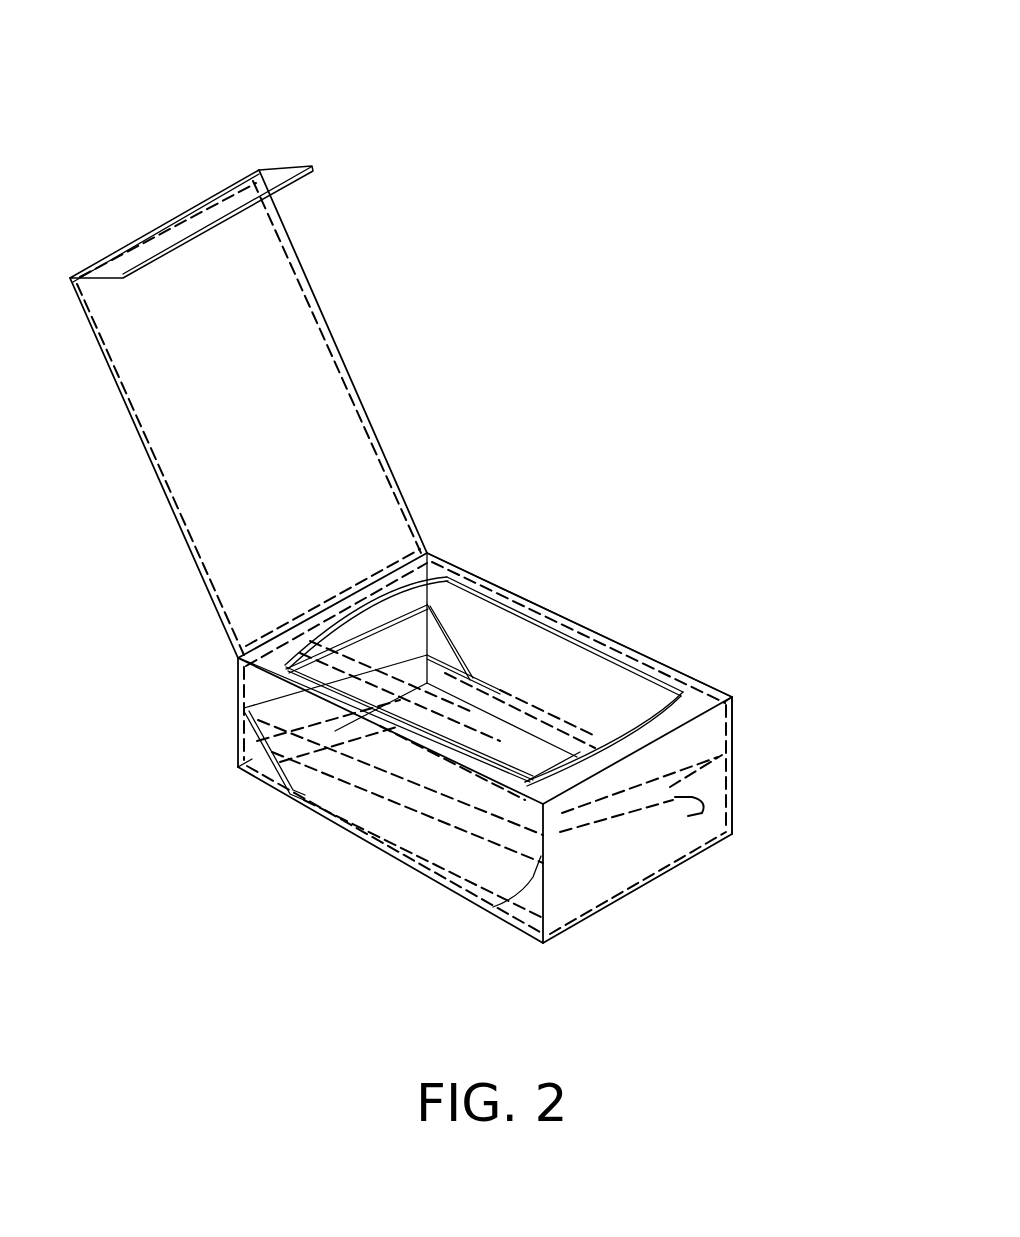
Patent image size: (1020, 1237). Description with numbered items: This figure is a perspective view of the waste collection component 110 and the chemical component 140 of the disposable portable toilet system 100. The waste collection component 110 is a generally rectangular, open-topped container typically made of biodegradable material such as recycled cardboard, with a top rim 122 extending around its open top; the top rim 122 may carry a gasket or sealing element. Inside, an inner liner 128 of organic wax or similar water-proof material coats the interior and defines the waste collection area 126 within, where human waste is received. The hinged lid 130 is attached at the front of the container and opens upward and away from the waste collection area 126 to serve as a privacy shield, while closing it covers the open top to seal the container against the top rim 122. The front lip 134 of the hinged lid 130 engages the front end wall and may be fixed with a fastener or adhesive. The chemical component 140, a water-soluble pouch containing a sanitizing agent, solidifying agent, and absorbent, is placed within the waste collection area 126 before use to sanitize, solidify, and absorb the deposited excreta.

The disposable portable toilet system 100 is at (168, 136).
The waste collection component 110 is at (226, 659).
The top rim 122 is at (692, 703).
The waste collection area 126 is at (472, 616).
The inner liner 128 is at (553, 681).
The hinged lid 130 is at (343, 296).
The front lip 134 is at (247, 193).
The chemical component 140 is at (593, 811).